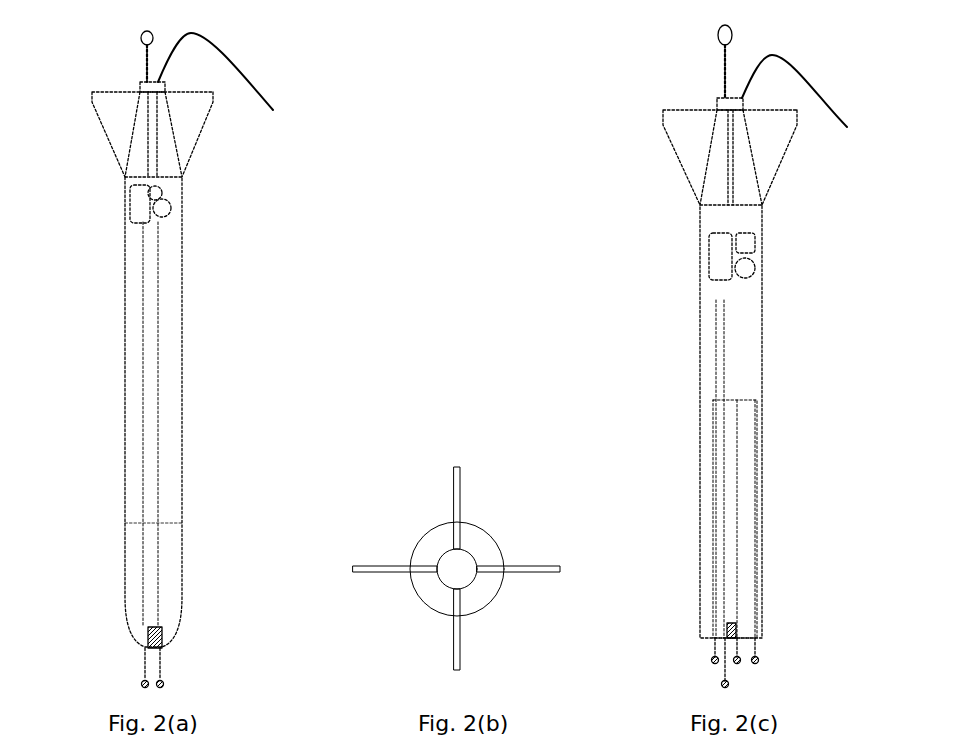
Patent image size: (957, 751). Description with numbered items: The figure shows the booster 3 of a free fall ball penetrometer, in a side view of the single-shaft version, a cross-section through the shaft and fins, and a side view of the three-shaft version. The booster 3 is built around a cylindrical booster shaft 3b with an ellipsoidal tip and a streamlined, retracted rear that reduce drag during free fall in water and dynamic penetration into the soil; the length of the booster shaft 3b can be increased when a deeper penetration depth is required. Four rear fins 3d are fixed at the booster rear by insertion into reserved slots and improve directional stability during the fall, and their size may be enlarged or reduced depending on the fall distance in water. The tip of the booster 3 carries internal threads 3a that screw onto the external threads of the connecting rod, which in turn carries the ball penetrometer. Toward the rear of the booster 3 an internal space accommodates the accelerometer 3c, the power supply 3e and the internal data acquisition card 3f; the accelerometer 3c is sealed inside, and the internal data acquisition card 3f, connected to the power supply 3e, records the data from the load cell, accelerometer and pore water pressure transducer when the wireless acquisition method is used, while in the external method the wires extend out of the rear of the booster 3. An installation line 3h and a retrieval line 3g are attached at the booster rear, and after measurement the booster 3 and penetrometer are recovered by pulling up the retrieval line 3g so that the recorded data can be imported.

In FIG. 2A, the booster 3 is at (236, 444).
In FIG. 2C, the booster 3 is at (771, 346).
In FIG. 2A, the internal threads 3a is at (169, 633).
In FIG. 2C, the internal threads 3a is at (744, 631).
In FIG. 2A, the booster shaft 3b is at (193, 318).
In FIG. 2B, the booster shaft 3b is at (487, 616).
In FIG. 2C, the booster shaft 3b is at (771, 476).
In FIG. 2A, the accelerometer 3c is at (191, 215).
In FIG. 2C, the accelerometer 3c is at (761, 268).
In FIG. 2A, the rear fins of booster 3d is at (193, 138).
In FIG. 2B, the rear fins of booster 3d is at (465, 492).
In FIG. 2C, the rear fins of booster 3d is at (779, 152).
In FIG. 2A, the power supply 3e is at (191, 192).
In FIG. 2C, the power supply 3e is at (761, 245).
In FIG. 2A, the internal data acquisition card 3f is at (111, 207).
In FIG. 2C, the internal data acquisition card 3f is at (702, 257).
In FIG. 2A, the retrieval line 3g is at (234, 55).
In FIG. 2C, the retrieval line 3g is at (799, 63).
In FIG. 2A, the installation line 3h is at (134, 53).
In FIG. 2C, the installation line 3h is at (717, 70).